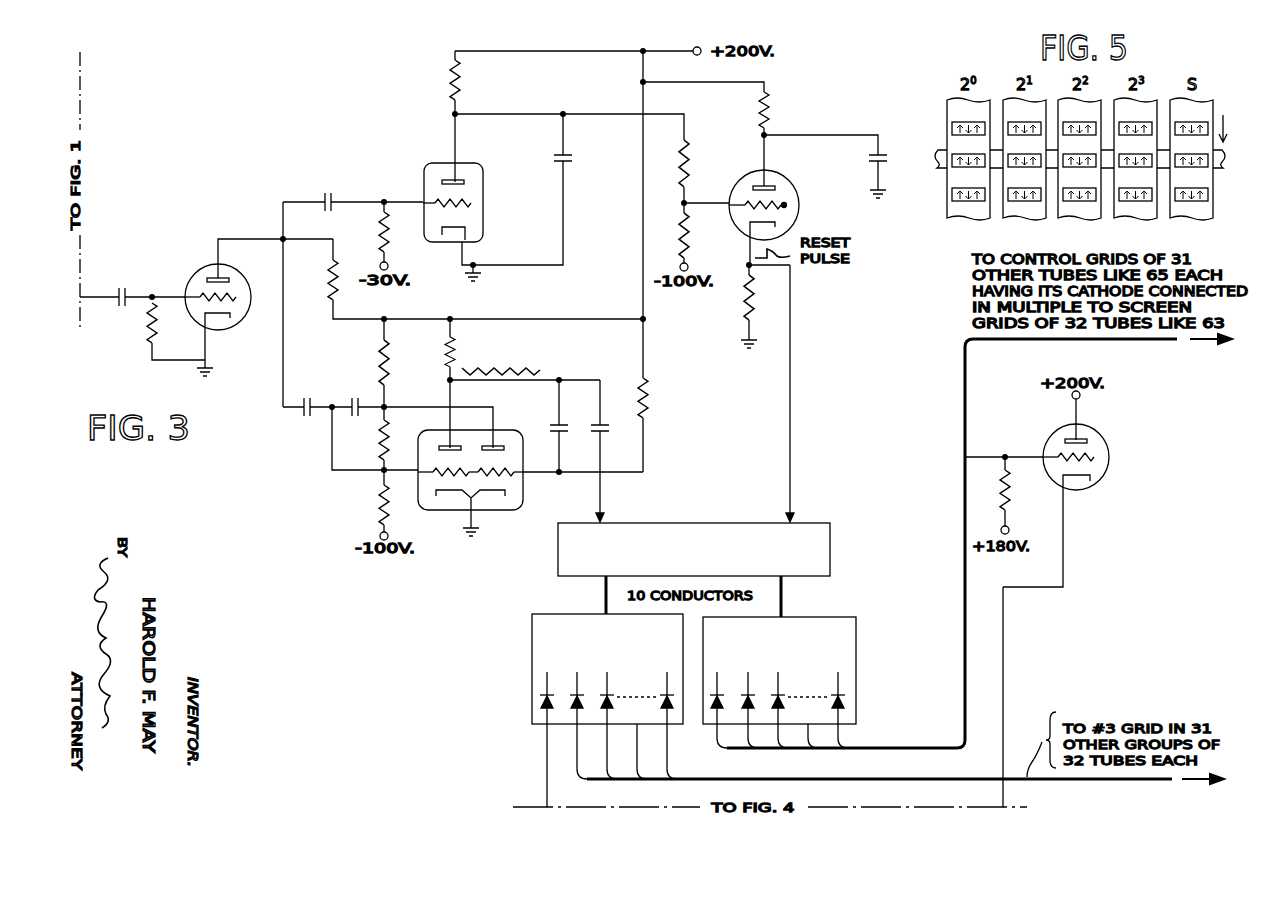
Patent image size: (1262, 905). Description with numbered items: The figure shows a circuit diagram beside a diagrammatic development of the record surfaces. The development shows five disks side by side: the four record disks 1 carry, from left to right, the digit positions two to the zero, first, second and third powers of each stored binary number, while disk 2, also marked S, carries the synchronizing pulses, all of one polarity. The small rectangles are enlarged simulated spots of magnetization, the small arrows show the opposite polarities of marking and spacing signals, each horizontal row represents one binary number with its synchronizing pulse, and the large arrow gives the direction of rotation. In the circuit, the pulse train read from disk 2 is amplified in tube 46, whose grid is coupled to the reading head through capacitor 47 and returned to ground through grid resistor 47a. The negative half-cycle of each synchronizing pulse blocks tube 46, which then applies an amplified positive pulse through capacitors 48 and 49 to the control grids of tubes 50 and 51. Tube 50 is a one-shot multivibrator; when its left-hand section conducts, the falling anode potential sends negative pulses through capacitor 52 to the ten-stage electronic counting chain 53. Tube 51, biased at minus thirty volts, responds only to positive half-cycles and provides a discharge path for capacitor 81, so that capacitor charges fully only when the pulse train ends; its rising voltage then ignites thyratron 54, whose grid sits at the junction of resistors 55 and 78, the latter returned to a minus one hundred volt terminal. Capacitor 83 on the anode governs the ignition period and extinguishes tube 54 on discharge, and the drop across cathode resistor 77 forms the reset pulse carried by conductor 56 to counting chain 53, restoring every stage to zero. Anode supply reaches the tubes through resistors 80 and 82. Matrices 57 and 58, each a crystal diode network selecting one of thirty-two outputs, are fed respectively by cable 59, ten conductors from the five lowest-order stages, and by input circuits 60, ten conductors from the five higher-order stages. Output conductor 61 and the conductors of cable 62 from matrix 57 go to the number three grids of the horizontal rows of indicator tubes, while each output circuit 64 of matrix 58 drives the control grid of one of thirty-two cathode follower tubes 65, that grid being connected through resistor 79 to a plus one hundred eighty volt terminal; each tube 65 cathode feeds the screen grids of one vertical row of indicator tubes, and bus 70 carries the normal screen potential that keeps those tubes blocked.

In FIG. 5, the record disk 1 is at (982, 212).
In FIG. 5, the synchronizing disk 2 is at (1205, 214).
In FIG. 3, the tube 46 is at (206, 270).
In FIG. 3, the capacitor 47 is at (121, 292).
In FIG. 3, the grid resistor 47a is at (147, 330).
In FIG. 3, the capacitor 48 is at (307, 395).
In FIG. 3, the capacitor 49 is at (327, 193).
In FIG. 3, the electron tube 50 is at (506, 430).
In FIG. 3, the vacuum tube triode 51 is at (444, 242).
In FIG. 3, the capacitor 52 is at (595, 423).
In FIG. 3, the electronic counting chain 53 is at (811, 523).
In FIG. 3, the Thyratron triode 54 is at (777, 177).
In FIG. 3, the resistor 55 is at (691, 162).
In FIG. 3, the conductor 56 is at (792, 327).
In FIG. 3, the matrix 57 is at (532, 650).
In FIG. 3, the matrix 58 is at (856, 655).
In FIG. 3, the cable 59 is at (602, 599).
In FIG. 3, the input circuits 60 is at (783, 599).
In FIG. 3, the output conductor 61 is at (547, 760).
In FIG. 3, the cable 62 is at (922, 778).
In FIG. 3, the output circuits 64 is at (920, 747).
In FIG. 3, the cathode follower tube 65 is at (1099, 433).
In FIG. 3, the bus 70 is at (1003, 652).
In FIG. 3, the cathode resistor 77 is at (752, 301).
In FIG. 3, the resistor 78 is at (688, 237).
In FIG. 3, the resistor 79 is at (1009, 492).
In FIG. 3, the plate resistor 80 is at (460, 75).
In FIG. 3, the capacitor 81 is at (577, 162).
In FIG. 3, the plate resistor 82 is at (770, 110).
In FIG. 3, the capacitor 83 is at (887, 153).